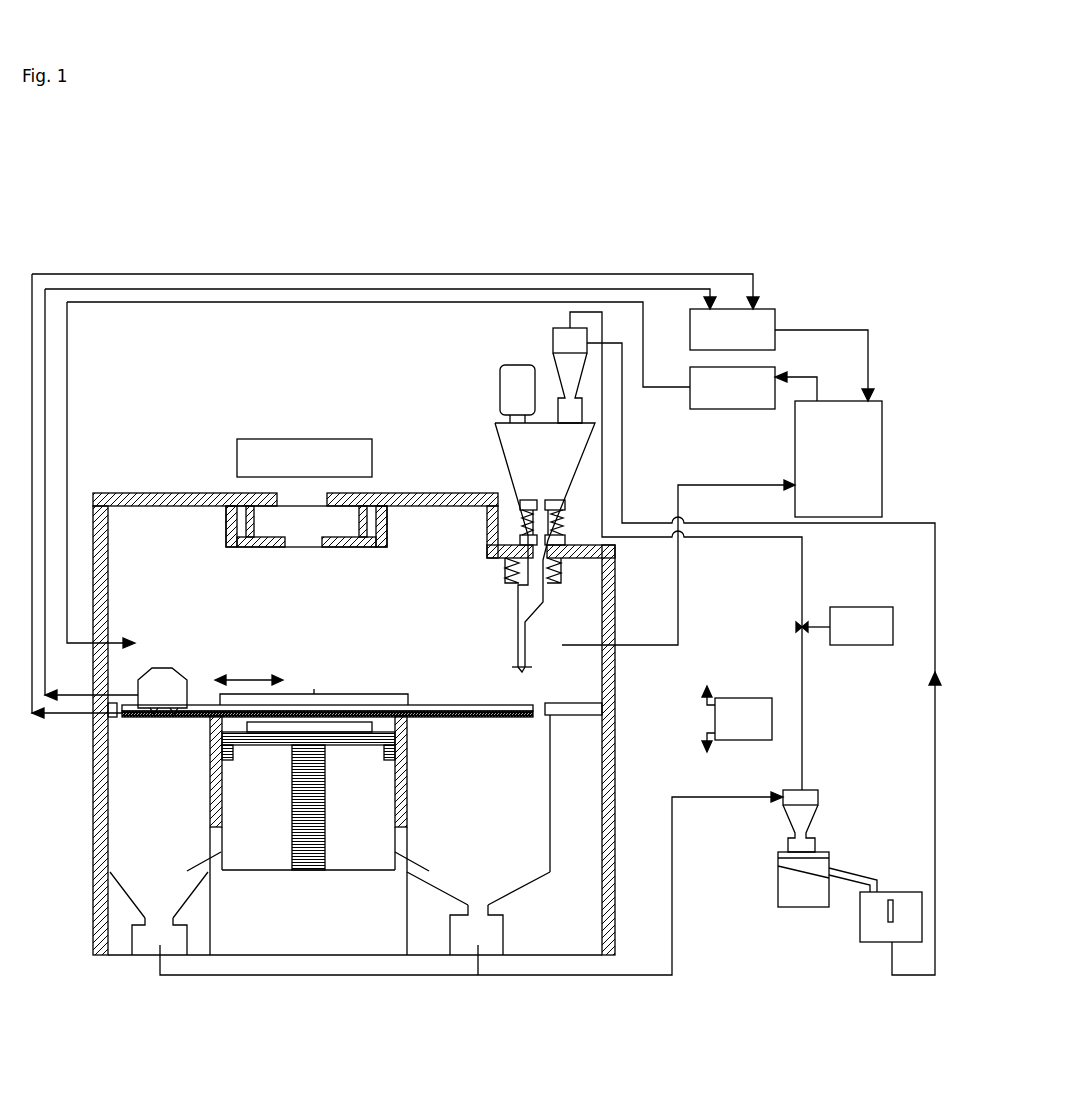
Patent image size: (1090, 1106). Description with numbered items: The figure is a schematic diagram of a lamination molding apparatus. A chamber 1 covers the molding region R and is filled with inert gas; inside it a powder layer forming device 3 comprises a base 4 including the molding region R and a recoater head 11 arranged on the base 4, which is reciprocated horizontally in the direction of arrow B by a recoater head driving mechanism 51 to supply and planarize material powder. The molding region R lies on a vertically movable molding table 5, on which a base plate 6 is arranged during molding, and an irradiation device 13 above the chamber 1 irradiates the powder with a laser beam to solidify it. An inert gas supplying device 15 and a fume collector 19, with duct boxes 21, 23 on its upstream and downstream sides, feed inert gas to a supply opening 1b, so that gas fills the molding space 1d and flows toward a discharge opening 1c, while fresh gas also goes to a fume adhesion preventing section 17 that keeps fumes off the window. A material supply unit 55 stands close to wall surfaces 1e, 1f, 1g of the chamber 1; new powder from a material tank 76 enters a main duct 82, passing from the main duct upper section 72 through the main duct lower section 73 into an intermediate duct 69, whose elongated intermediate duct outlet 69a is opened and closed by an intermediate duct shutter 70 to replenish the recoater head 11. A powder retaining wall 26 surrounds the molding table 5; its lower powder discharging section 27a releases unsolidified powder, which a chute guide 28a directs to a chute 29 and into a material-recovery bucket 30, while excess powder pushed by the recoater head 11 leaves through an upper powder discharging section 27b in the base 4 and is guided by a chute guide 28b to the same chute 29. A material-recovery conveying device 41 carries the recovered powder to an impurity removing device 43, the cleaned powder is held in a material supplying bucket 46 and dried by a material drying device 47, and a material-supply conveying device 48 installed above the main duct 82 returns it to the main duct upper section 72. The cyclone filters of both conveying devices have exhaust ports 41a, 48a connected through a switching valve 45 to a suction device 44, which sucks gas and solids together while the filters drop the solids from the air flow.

The chamber 1 is at (160, 490).
The supply opening 1b is at (103, 475).
The discharge opening 1c is at (677, 562).
The molding space 1d is at (241, 594).
The wall surface 1e is at (505, 570).
The wall surface 1f is at (487, 528).
The wall surface 1g is at (600, 578).
The powder layer forming device 3 is at (218, 640).
The base 4 is at (197, 717).
The molding table 5 is at (292, 770).
The base plate 6 is at (360, 732).
The recoater head 11 is at (168, 668).
The irradiation device 13 is at (305, 439).
The inert gas supplying device 15 is at (775, 740).
The fume adhesion preventing section 17 is at (226, 545).
The fume collector 19 is at (795, 420).
The duct box 21 is at (775, 312).
The duct box 23 is at (717, 409).
The powder retaining wall 26 is at (222, 800).
The lower powder discharging section 27a is at (210, 828).
The upper powder discharging section 27b is at (121, 724).
The chute guide 28a is at (187, 868).
The chute guide 28b is at (110, 770).
The chute 29 is at (185, 902).
The material-recovery bucket 30 is at (132, 940).
The material-recovery conveying device 41 is at (818, 797).
The exhaust port 41a is at (806, 790).
The impurity removing device 43 is at (788, 907).
The suction device 44 is at (850, 645).
The switching valve 45 is at (797, 626).
The material supplying bucket 46 is at (860, 928).
The material drying device 47 is at (893, 900).
The material-supply conveying device 48 is at (553, 340).
The exhaust port 48a is at (570, 328).
The recoater head driving mechanism 51 is at (420, 718).
The material supply unit 55 is at (472, 378).
The intermediate duct 69 is at (518, 612).
The intermediate duct outlet 69a is at (518, 667).
The intermediate duct shutter 70 is at (528, 670).
The main duct upper section 72 is at (515, 460).
The main duct lower section 73 is at (565, 525).
The material tank 76 is at (510, 365).
The main duct 82 is at (494, 426).
The molding region R is at (314, 690).
The arrow B is at (249, 668).